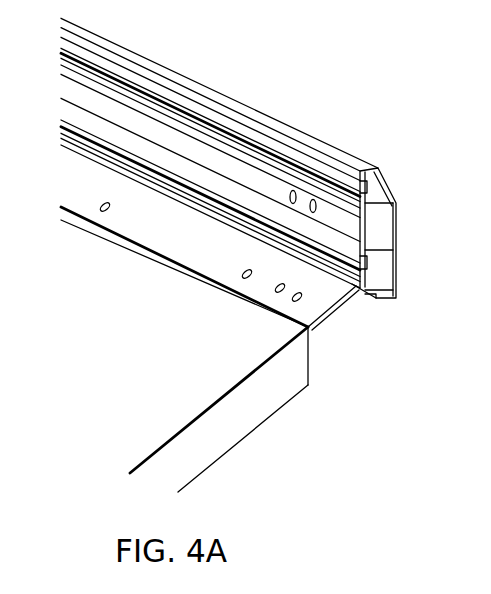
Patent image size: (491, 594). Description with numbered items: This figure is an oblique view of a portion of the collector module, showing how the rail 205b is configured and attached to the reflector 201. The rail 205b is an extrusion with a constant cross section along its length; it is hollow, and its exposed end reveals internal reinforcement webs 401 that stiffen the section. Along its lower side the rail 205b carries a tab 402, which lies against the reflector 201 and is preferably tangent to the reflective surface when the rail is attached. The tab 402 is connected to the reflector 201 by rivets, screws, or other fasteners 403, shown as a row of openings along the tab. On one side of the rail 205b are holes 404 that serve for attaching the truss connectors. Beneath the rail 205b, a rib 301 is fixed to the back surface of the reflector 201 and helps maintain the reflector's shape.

The rail 205b is at (223, 100).
The internal reinforcement webs 401 is at (378, 247).
The tab 402 is at (318, 300).
The fasteners 403 is at (275, 291).
The holes 404 is at (309, 209).
The reflector 201 is at (165, 380).
The ribs 301 is at (247, 428).